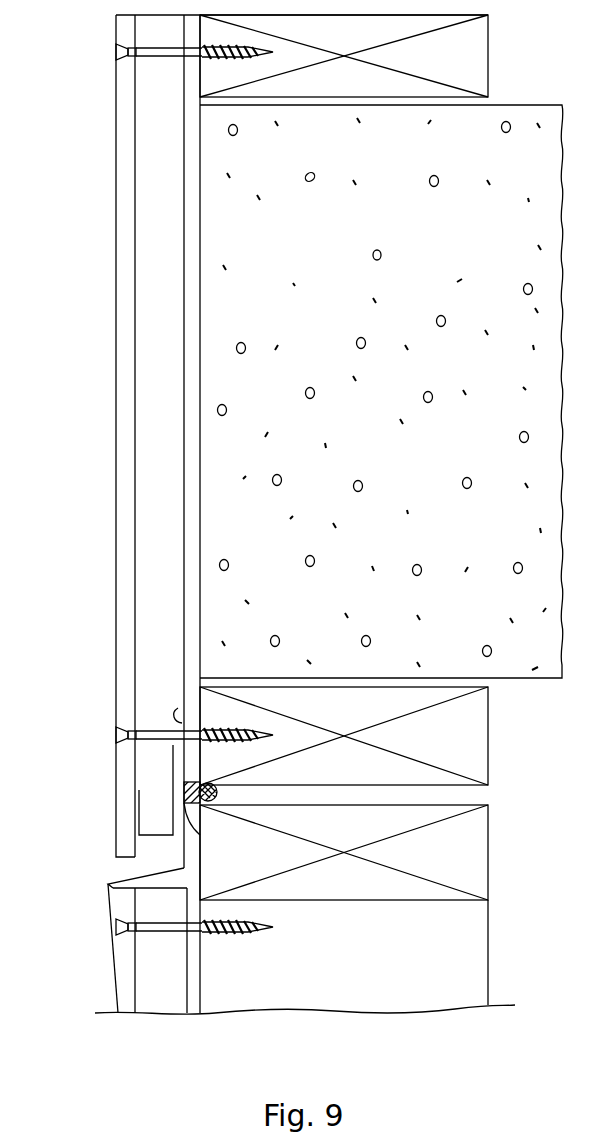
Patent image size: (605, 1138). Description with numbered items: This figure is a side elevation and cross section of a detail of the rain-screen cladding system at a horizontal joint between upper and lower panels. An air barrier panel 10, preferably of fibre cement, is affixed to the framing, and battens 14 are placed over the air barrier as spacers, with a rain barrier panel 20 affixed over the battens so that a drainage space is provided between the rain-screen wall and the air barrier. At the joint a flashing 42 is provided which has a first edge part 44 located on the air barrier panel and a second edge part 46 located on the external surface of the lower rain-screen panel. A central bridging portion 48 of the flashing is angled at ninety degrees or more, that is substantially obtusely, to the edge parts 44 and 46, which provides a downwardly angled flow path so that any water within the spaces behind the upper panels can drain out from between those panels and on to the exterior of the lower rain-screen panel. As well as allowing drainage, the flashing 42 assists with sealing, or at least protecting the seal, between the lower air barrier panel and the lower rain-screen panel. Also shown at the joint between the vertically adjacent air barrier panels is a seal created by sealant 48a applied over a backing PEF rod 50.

The air barrier panel 10 is at (190, 317).
The batten 14 is at (178, 498).
The rain barrier panel 20 is at (125, 370).
The flashing 42 is at (104, 872).
The first edge part 44 is at (180, 743).
The second edge part 46 is at (112, 948).
The central bridging portion 48 is at (140, 877).
The sealant 48a is at (203, 812).
The backing PEF rod 50 is at (217, 793).